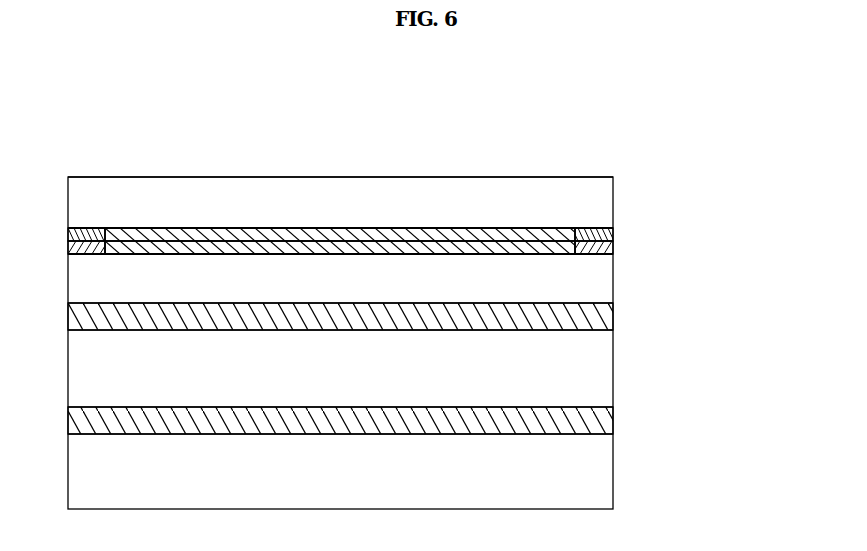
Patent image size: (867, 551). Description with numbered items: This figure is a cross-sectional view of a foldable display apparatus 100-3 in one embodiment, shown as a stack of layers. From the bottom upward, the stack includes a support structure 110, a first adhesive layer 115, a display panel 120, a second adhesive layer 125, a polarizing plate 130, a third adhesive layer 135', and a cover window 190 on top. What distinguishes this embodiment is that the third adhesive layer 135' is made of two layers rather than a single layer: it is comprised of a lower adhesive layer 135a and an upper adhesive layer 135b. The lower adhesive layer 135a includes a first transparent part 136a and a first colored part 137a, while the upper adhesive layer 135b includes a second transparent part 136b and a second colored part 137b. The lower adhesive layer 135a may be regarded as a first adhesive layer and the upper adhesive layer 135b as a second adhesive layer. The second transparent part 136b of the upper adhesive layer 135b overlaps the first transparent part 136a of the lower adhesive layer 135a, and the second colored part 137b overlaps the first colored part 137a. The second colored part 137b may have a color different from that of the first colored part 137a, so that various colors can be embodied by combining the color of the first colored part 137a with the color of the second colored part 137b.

The foldable display apparatus 100-3 is at (593, 72).
The support structure 110 is at (605, 470).
The first adhesive layer 115 is at (607, 421).
The display panel 120 is at (605, 368).
The second adhesive layer 125 is at (603, 322).
The polarizing plate 130 is at (598, 287).
The third adhesive layer 135' is at (419, 197).
The lower adhesive layer 135a is at (419, 209).
The upper adhesive layer 135b is at (419, 182).
The first transparent part 136a is at (577, 255).
The second transparent part 136b is at (578, 228).
The first colored part 137a is at (612, 247).
The second colored part 137b is at (613, 236).
The cover window 190 is at (605, 190).